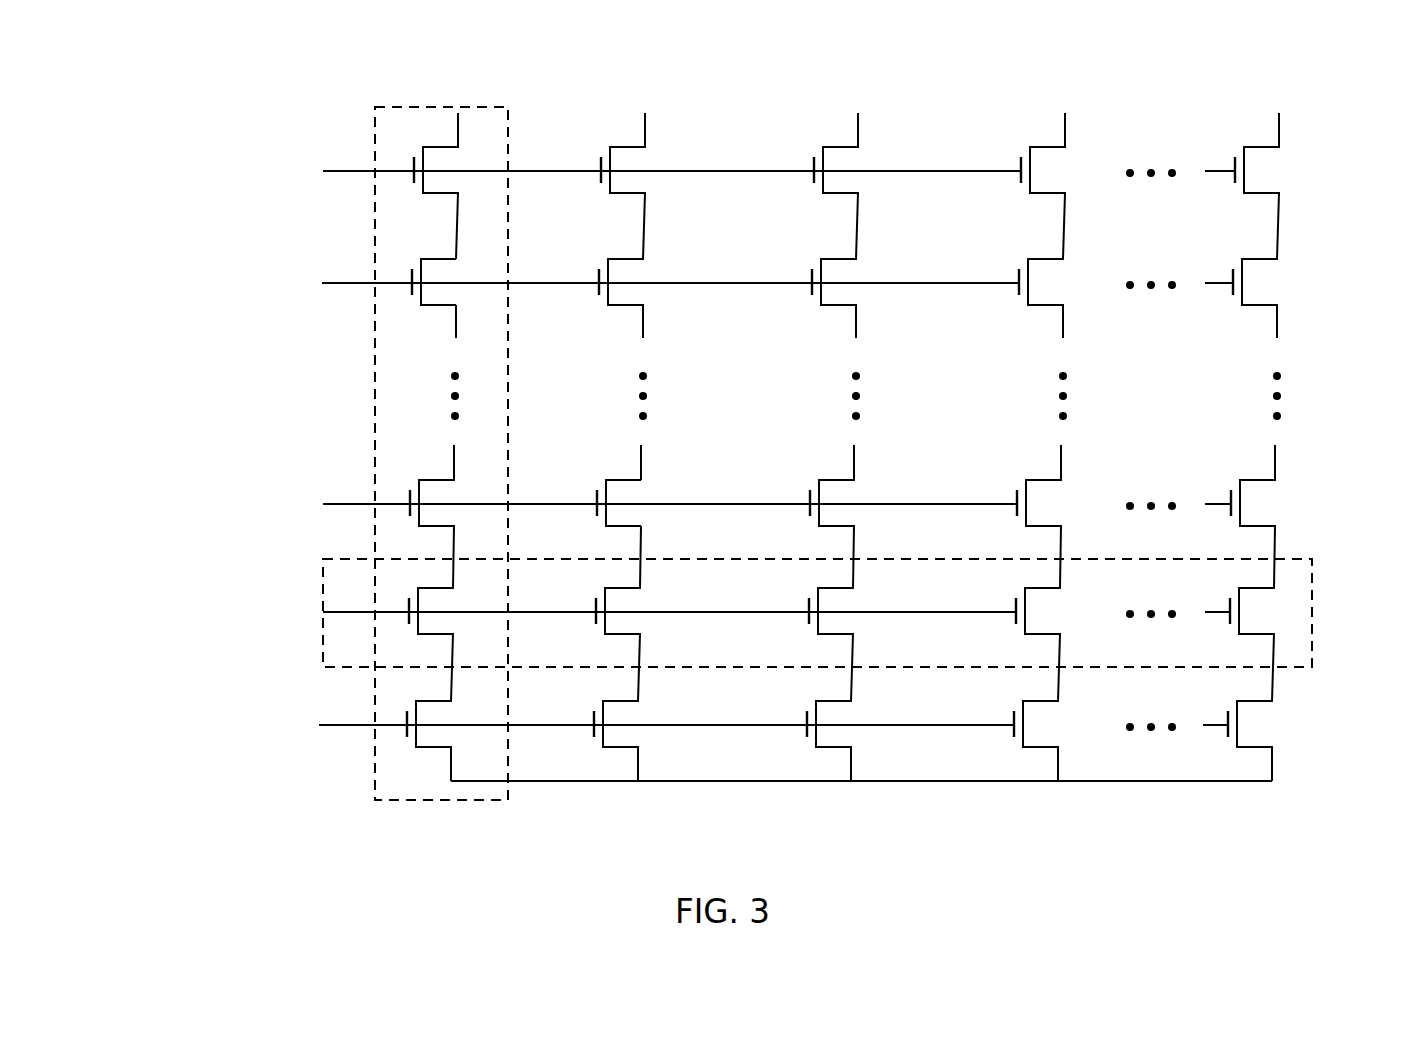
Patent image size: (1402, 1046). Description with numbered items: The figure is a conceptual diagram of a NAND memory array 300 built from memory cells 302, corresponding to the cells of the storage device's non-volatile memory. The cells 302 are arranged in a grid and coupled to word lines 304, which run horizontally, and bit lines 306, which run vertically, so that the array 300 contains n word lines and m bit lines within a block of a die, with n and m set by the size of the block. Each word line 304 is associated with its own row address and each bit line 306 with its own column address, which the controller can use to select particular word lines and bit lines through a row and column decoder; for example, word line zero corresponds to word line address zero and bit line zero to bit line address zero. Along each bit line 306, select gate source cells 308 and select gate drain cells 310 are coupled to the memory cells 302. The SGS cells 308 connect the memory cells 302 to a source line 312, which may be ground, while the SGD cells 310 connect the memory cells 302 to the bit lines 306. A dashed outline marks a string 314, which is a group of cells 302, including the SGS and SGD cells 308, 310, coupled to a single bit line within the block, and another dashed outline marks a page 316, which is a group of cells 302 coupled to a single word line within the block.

The NAND memory array 300 is at (146, 64).
The cells 302 is at (438, 258).
The word lines 304 is at (223, 263).
The bit lines 306 is at (852, 58).
The select gate source (SGS) cells 308 is at (212, 708).
The select gate drain (SGD) cells 310 is at (212, 158).
The source line 312 is at (960, 783).
The string 314 is at (373, 106).
The page 316 is at (1310, 559).